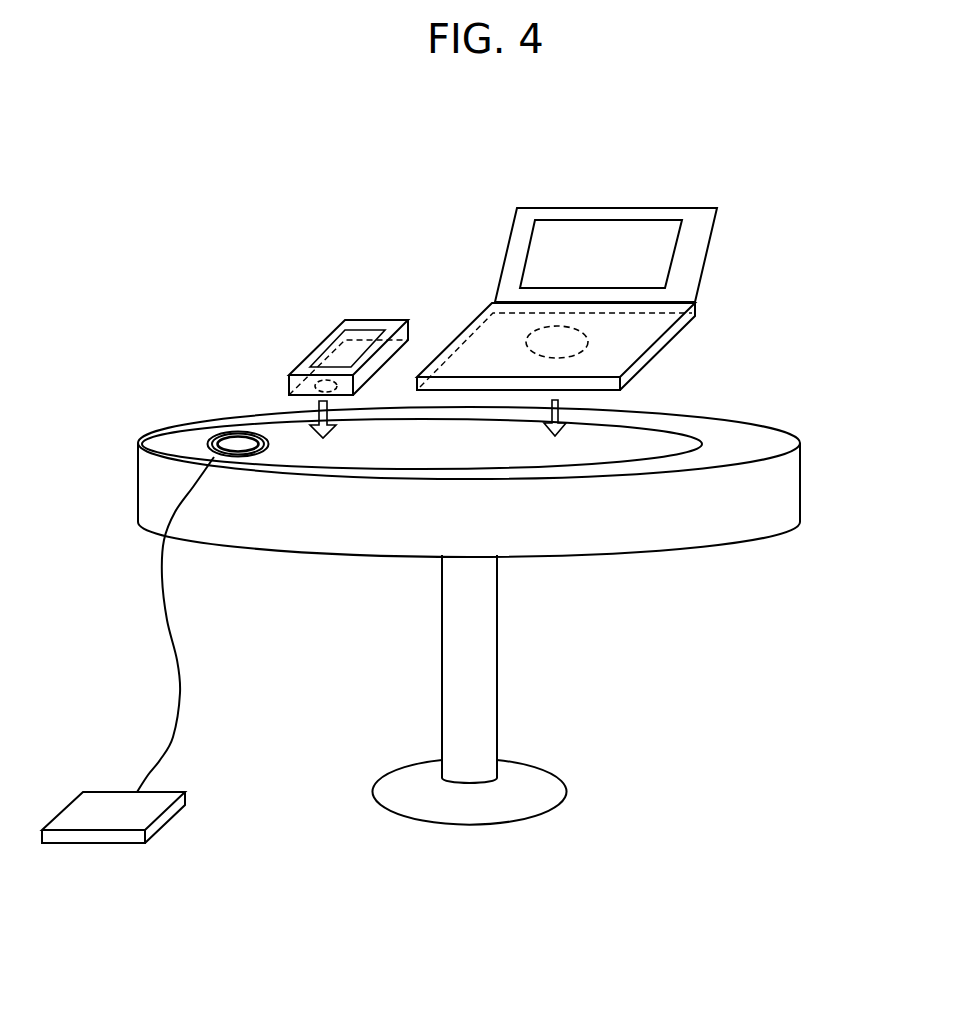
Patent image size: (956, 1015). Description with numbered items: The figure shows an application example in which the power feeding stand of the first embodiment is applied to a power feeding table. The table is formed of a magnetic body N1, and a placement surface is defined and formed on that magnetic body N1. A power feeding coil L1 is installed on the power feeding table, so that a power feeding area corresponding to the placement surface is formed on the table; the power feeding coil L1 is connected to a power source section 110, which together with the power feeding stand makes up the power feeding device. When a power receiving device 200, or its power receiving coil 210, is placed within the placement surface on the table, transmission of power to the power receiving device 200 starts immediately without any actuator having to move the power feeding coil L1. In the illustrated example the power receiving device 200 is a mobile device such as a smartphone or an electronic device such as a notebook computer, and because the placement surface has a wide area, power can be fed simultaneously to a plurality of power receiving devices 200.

The magnetic body N1 is at (778, 488).
The power feeding coil L1 is at (213, 435).
The power source section 110 is at (155, 810).
The power receiving device 200 is at (377, 327).
The power receiving coil 210 is at (310, 380).